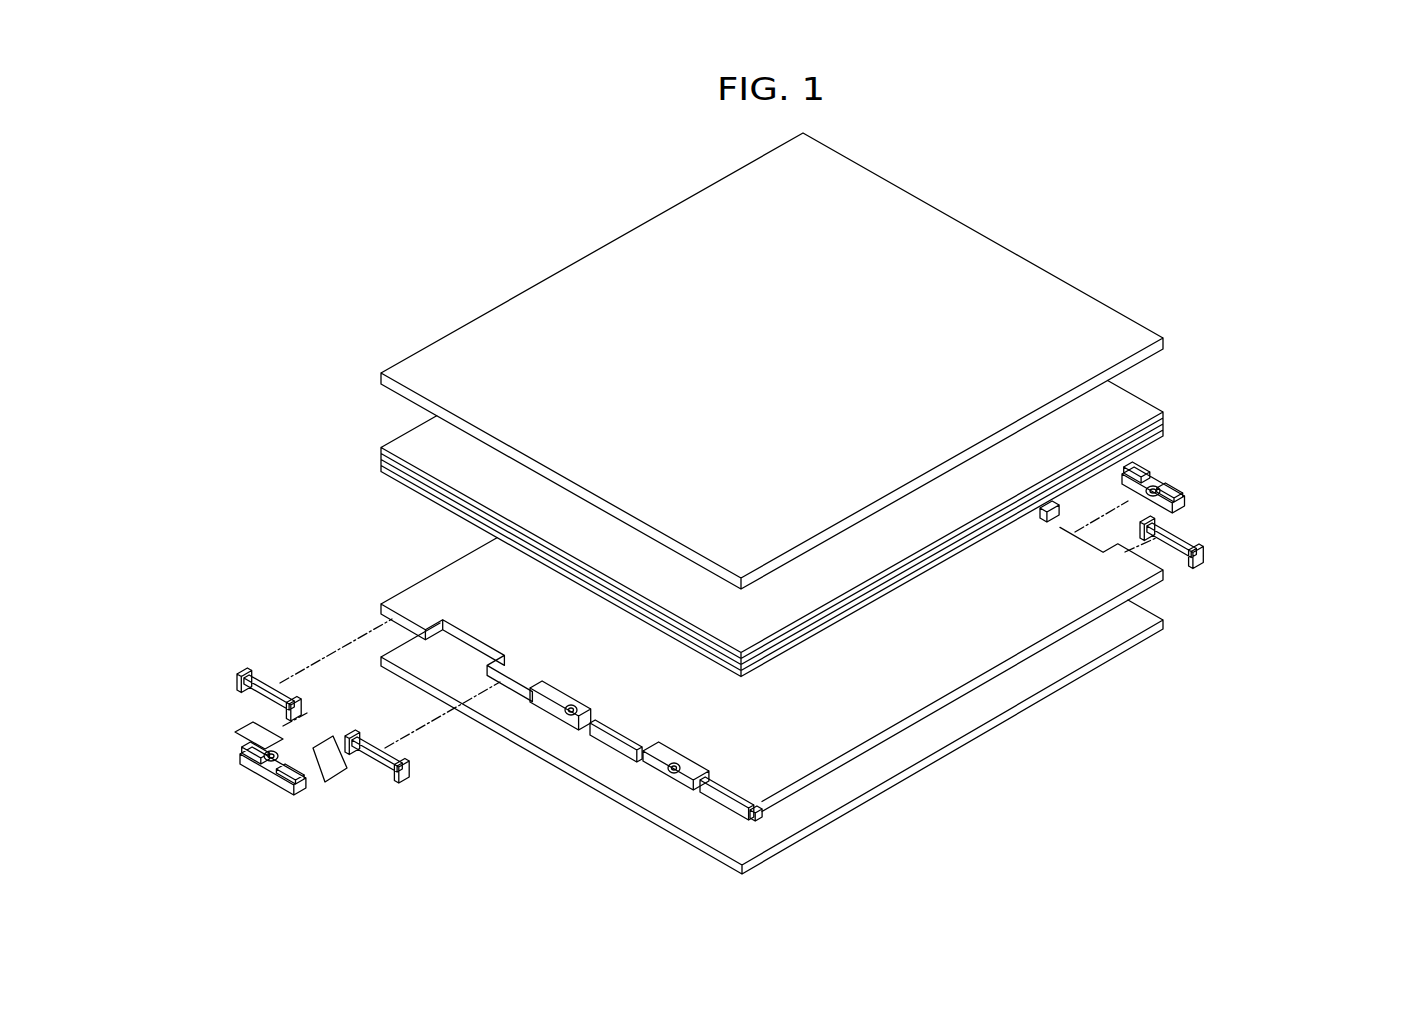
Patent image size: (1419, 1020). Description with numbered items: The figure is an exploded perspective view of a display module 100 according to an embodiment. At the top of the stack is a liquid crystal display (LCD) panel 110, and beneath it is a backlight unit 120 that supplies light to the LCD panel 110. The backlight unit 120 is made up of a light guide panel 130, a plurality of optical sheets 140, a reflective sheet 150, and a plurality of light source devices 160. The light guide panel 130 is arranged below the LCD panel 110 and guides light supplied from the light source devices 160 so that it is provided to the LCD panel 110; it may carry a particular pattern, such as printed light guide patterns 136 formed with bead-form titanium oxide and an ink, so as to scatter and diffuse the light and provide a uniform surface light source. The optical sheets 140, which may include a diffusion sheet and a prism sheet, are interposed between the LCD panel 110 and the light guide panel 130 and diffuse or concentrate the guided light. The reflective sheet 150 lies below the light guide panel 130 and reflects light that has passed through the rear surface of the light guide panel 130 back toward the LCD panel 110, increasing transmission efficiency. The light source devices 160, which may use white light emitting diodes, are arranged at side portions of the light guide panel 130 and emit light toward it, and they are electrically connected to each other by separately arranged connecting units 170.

The display module 100 is at (459, 273).
The liquid crystal display (LCD) panel 110 is at (1172, 346).
The backlight unit 120 is at (1338, 372).
The light guide panel 130 is at (1153, 580).
The light guide patterns 136 is at (878, 701).
The optical sheets 140 is at (1178, 421).
The reflective sheet 150 is at (1138, 643).
The light source devices 160 is at (1176, 473).
The connecting units 170 is at (1193, 530).